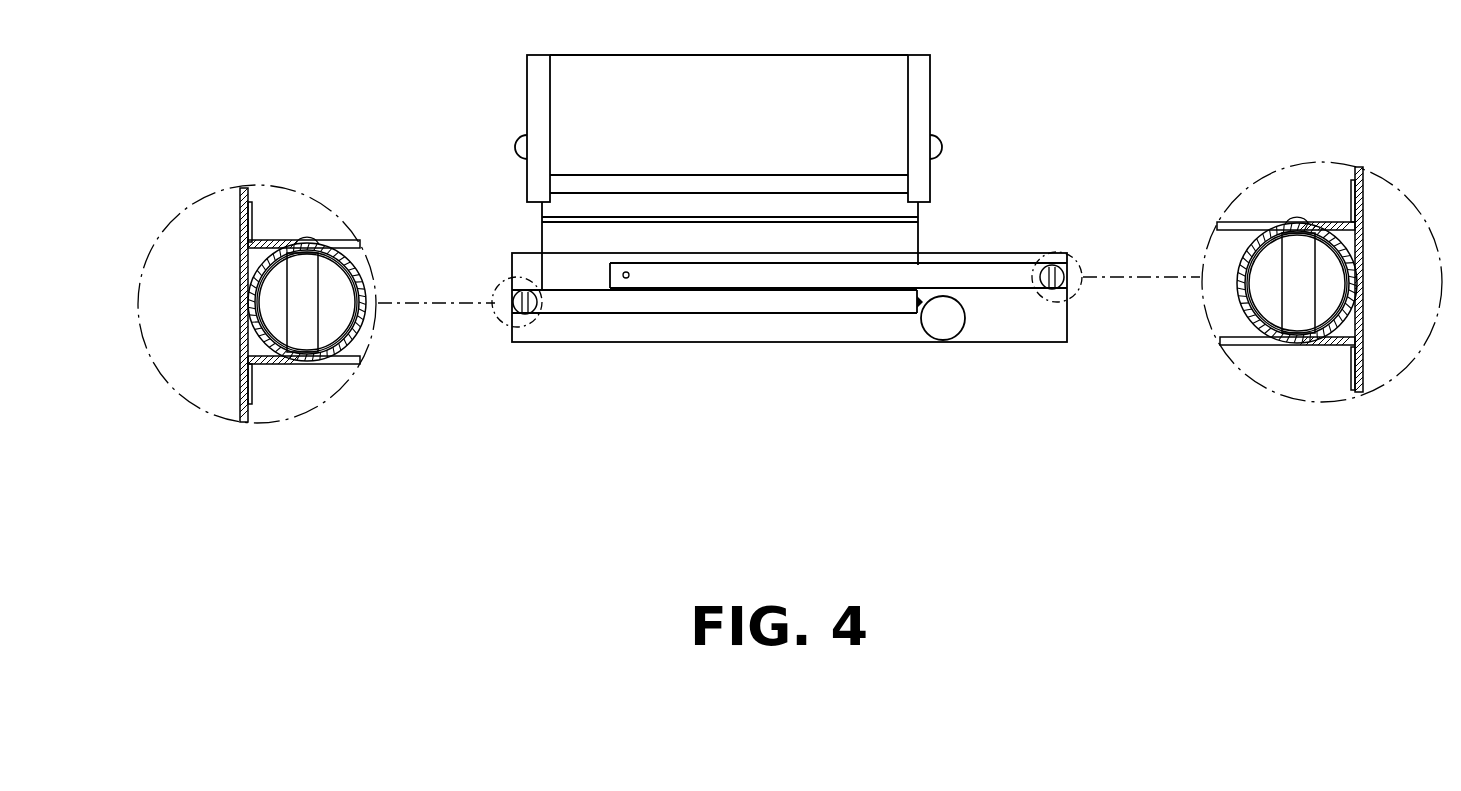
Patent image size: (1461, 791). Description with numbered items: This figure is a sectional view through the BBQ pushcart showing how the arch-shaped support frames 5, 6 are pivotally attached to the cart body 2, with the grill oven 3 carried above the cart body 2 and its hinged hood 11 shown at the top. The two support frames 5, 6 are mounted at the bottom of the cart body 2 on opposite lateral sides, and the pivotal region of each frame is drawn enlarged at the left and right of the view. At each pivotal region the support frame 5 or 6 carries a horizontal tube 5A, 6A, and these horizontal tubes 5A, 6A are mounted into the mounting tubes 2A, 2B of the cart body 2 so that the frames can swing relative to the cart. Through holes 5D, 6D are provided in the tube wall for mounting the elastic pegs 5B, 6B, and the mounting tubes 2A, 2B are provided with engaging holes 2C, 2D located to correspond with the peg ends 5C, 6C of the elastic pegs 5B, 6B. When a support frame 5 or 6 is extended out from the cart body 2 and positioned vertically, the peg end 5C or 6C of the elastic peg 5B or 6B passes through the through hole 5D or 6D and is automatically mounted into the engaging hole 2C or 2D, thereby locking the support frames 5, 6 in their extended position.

The cart body 2 is at (1008, 253).
The mounting tube 2A is at (277, 363).
The mounting tube 2B is at (1333, 347).
The engaging hole 2C is at (368, 318).
The engaging hole 2D is at (1293, 287).
The grill oven 3 is at (950, 138).
The support frame 5 is at (738, 303).
The horizontal tube 5A is at (252, 340).
The elastic peg 5B is at (308, 303).
The peg end 5C is at (303, 247).
The through hole 5D is at (270, 240).
The support frame 6 is at (967, 278).
The horizontal tube 6A is at (1308, 347).
The elastic peg 6B is at (1245, 310).
The peg end 6C is at (1305, 227).
The through hole 6D is at (1283, 227).
The hood 11 is at (887, 117).